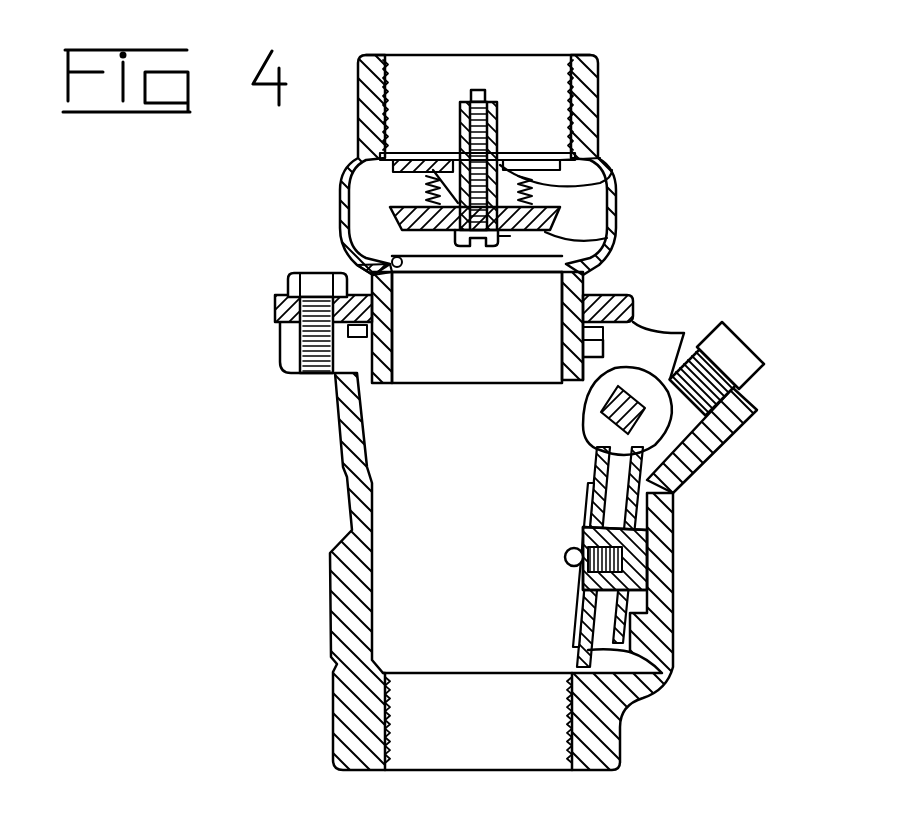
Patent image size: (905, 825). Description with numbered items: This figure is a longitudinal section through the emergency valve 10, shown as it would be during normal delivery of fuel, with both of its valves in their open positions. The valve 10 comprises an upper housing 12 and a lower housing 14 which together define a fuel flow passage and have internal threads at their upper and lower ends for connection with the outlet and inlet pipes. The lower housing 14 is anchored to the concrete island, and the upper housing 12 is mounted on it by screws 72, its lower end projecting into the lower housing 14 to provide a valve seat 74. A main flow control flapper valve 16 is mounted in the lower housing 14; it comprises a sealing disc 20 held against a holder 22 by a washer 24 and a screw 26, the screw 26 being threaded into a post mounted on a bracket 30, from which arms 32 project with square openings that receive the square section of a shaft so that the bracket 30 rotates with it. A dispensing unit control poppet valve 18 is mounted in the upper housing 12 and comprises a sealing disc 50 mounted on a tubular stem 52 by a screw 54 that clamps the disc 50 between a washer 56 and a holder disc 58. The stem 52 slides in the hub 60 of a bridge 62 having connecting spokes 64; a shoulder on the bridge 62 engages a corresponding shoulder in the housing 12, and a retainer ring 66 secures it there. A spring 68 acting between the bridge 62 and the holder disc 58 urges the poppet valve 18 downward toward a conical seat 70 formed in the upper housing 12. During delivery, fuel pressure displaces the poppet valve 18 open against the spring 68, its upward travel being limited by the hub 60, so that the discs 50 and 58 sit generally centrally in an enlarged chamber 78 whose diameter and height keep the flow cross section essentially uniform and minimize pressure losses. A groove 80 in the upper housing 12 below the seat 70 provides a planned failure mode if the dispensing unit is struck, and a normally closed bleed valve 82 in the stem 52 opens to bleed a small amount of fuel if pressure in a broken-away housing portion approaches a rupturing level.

The emergency valve 10 is at (241, 251).
The upper housing 12 is at (598, 95).
The lower housing 14 is at (343, 478).
The flapper valve 16 is at (552, 576).
The poppet valve 18 is at (462, 318).
The sealing disc 20 is at (597, 470).
The holder 22 is at (672, 672).
The washer 24 is at (586, 503).
The screw 26 is at (565, 557).
The bracket 30 is at (673, 612).
The arms 32 is at (690, 468).
The sealing disc 50 is at (613, 233).
The stem 52 is at (490, 124).
The screw 54 is at (507, 246).
The washer 56 is at (585, 259).
The holder disc 58 is at (612, 206).
The hub 60 is at (529, 175).
The bridge 62 is at (603, 158).
The spokes 64 is at (431, 160).
The retainer ring 66 is at (395, 153).
The spring 68 is at (618, 173).
The conical seat 70 is at (399, 266).
The screws 72 is at (287, 287).
The valve seat 74 is at (363, 348).
The enlarged chamber 78 is at (374, 201).
The groove 80 is at (363, 275).
The bleed valve 82 is at (494, 80).